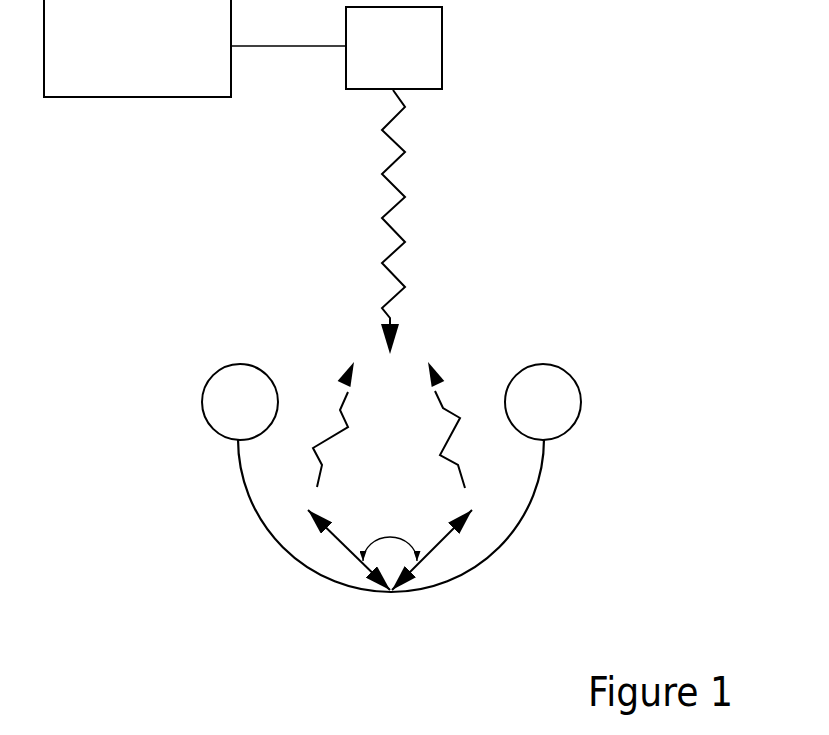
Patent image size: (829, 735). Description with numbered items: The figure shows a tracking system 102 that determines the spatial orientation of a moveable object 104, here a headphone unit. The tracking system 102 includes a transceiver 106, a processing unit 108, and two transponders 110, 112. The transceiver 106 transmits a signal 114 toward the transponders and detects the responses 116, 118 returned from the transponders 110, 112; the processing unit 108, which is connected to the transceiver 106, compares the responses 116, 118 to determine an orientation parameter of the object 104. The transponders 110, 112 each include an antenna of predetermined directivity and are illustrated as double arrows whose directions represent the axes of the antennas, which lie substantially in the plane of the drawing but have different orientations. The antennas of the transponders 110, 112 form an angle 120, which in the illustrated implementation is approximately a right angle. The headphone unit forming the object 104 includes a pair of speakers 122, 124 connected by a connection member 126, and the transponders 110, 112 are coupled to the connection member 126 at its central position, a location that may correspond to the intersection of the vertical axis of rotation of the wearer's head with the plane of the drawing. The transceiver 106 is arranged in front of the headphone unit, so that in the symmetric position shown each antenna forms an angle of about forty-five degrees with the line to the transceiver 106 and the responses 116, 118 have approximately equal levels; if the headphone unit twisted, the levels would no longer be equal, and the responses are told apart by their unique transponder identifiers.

The tracking system 102 is at (580, 118).
The moveable object 104 is at (578, 488).
The transceiver 106 is at (442, 46).
The processing unit 108 is at (139, 97).
The transponder 110 is at (343, 547).
The transponder 112 is at (438, 547).
The signal 114 is at (395, 180).
The response 116 is at (328, 431).
The response 118 is at (461, 418).
The angle 120 is at (390, 536).
The speaker 122 is at (213, 372).
The speaker 124 is at (569, 369).
The connection member 126 is at (528, 507).